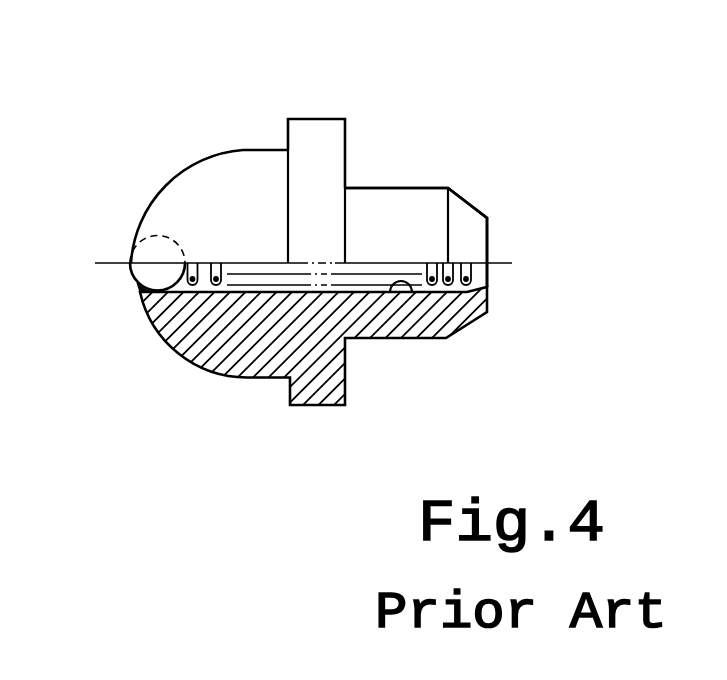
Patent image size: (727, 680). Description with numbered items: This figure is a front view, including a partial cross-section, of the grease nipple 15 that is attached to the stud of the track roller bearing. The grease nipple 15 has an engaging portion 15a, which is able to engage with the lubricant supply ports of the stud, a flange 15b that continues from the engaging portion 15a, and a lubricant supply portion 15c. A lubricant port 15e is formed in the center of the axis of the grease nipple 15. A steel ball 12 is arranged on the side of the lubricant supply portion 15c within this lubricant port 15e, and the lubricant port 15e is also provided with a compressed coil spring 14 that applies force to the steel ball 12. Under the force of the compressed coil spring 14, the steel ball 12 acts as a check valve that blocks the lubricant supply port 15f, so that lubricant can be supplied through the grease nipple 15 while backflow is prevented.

The grease nipple 15 is at (180, 133).
The engaging portion 15a is at (415, 207).
The flange 15b is at (307, 132).
The lubricant supply portion 15c is at (175, 205).
The lubricant port 15e is at (413, 293).
The lubricant supply port 15f is at (141, 289).
The steel ball 12 is at (158, 267).
The compressed coil spring 14 is at (160, 336).